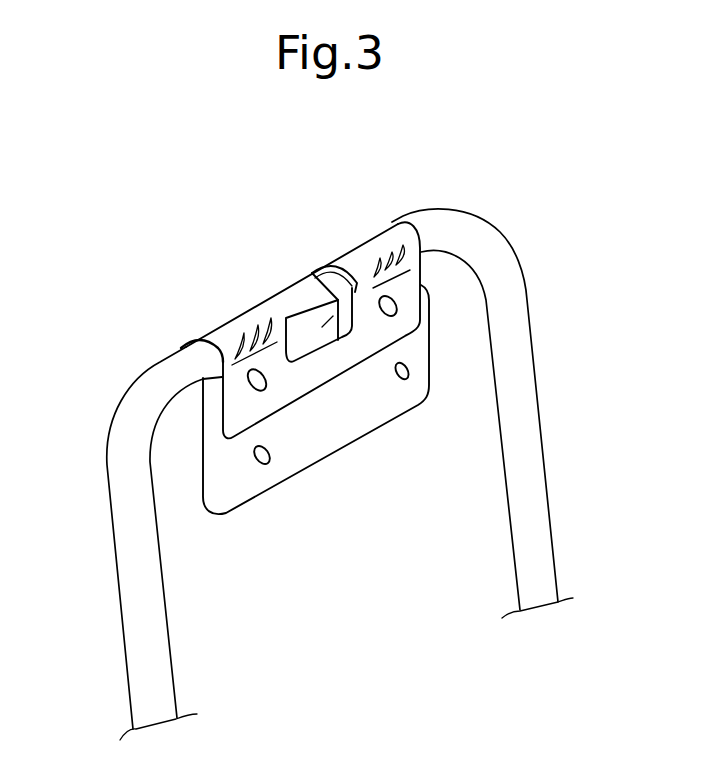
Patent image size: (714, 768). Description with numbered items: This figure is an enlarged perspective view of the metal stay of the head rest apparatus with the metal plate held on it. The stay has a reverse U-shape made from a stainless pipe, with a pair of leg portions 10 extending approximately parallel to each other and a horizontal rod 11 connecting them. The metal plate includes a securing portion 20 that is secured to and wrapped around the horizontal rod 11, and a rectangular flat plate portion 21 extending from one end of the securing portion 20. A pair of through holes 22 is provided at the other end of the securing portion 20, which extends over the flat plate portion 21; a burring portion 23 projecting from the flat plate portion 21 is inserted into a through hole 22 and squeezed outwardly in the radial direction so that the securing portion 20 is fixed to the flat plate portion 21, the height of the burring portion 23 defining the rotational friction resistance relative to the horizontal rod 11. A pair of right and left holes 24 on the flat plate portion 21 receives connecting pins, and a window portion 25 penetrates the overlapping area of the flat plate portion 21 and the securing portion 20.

The leg portions 10 is at (131, 588).
The horizontal rod 11 is at (283, 296).
The securing portion 20 is at (282, 289).
The flat plate portion 21 is at (233, 493).
The through holes 22 is at (394, 312).
The burring portion 23 is at (228, 346).
The right and left holes 24 is at (410, 368).
The window portion 25 is at (316, 273).